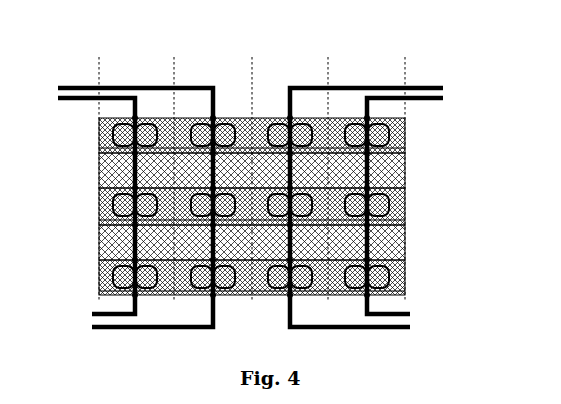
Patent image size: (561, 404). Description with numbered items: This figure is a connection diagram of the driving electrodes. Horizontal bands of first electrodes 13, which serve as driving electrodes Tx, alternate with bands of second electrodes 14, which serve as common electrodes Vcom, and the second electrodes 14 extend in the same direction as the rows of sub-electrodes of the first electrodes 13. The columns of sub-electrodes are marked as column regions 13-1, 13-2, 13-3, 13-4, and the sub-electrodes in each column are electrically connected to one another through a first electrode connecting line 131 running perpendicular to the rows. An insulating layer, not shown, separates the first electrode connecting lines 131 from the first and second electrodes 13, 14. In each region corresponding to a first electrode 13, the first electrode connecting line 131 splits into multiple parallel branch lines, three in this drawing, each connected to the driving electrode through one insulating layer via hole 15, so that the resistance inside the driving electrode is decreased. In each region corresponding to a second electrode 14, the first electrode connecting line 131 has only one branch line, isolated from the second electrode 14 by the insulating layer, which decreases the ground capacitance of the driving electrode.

The first electrode 13 is at (100, 208).
The first region of layer 13 13-1 is at (174, 67).
The second region of layer 13 13-2 is at (252, 67).
The third region of layer 13 13-3 is at (328, 67).
The fourth region of layer 13 13-4 is at (405, 67).
The second electrode 14 is at (100, 175).
The insulating layer via hole 15 is at (385, 137).
The first electrode connecting line 131 is at (440, 84).